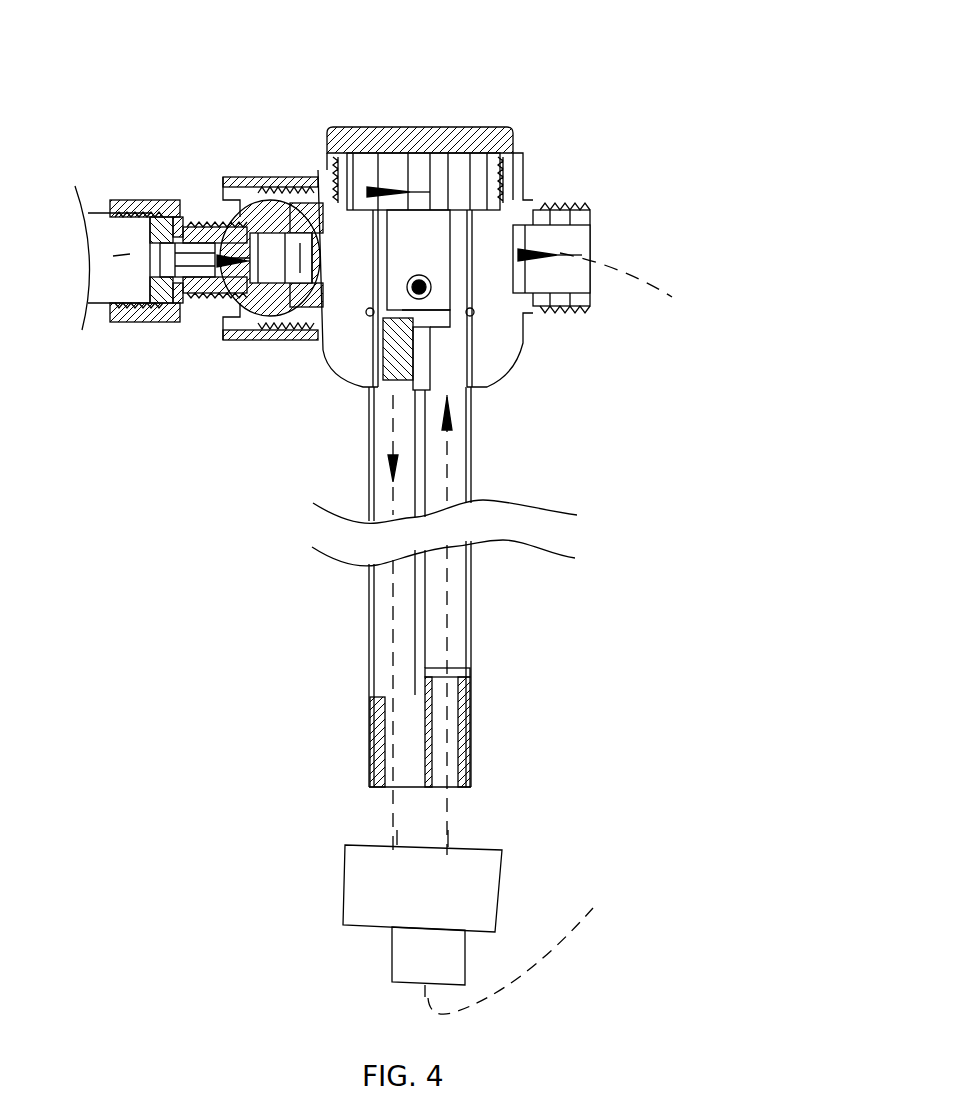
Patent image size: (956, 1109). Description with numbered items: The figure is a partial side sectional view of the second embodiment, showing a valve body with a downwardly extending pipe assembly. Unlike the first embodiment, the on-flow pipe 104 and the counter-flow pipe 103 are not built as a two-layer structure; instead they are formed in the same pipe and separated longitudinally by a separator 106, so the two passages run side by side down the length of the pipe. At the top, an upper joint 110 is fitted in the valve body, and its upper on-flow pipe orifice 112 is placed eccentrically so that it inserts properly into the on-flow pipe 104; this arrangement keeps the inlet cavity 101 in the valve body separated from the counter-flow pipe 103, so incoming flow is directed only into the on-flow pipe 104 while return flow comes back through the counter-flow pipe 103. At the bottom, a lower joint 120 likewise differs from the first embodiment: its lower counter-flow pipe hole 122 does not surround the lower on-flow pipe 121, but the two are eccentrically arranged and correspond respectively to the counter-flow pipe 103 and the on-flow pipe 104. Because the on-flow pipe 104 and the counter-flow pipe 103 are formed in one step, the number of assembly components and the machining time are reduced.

The inlet cavity 101 is at (402, 228).
The upper joint 110 is at (453, 210).
The upper on-flow pipe orifice 112 is at (420, 373).
The separator 106 is at (420, 440).
The on-flow pipe 104 is at (385, 640).
The counter-flow pipe 103 is at (458, 613).
The lower joint 120 is at (427, 680).
The lower counter-flow pipe hole 122 is at (452, 773).
The lower on-flow pipe 121 is at (393, 767).